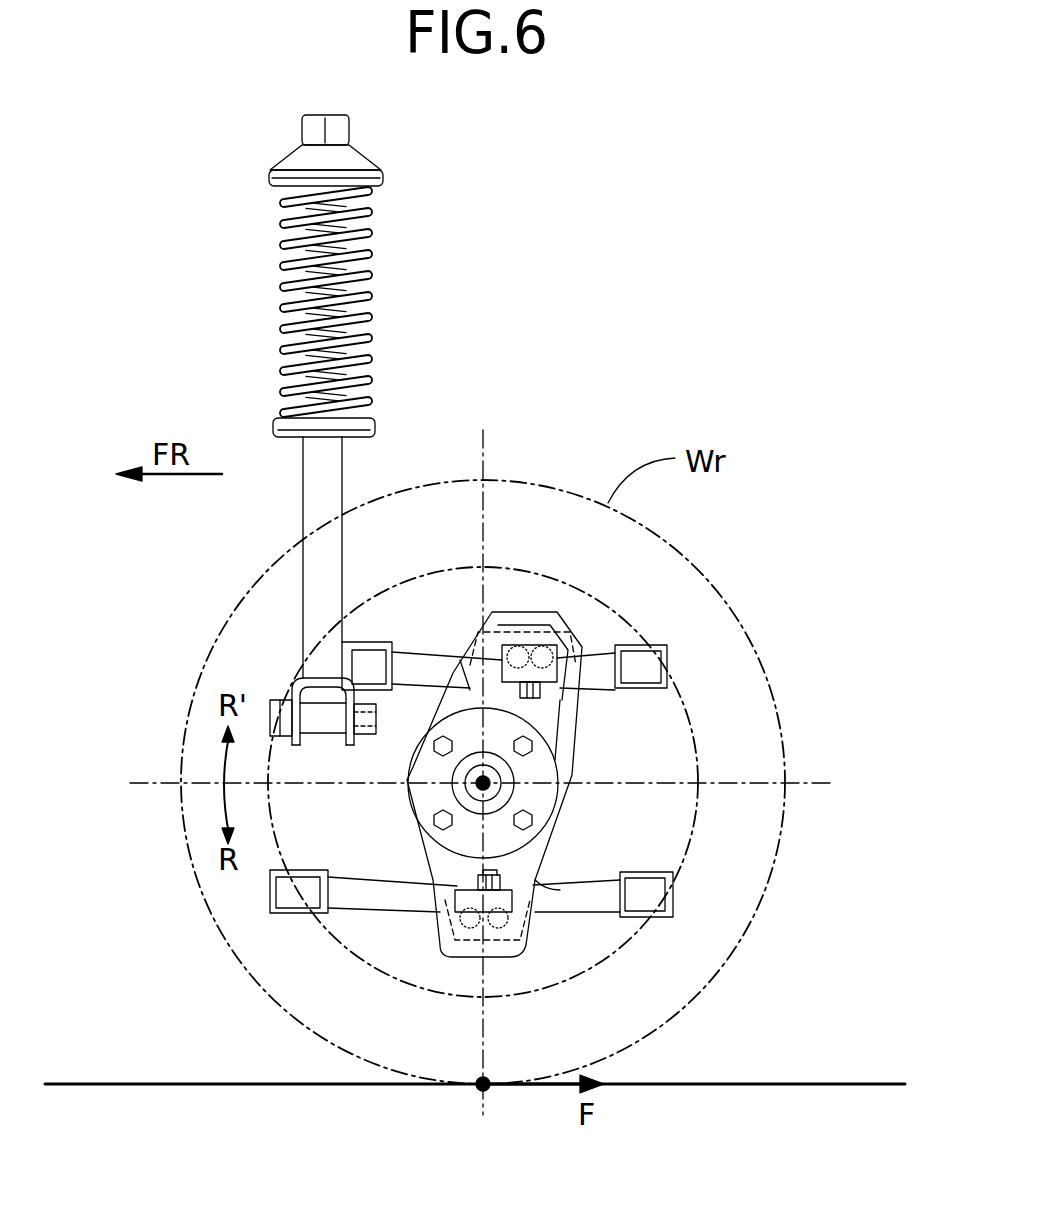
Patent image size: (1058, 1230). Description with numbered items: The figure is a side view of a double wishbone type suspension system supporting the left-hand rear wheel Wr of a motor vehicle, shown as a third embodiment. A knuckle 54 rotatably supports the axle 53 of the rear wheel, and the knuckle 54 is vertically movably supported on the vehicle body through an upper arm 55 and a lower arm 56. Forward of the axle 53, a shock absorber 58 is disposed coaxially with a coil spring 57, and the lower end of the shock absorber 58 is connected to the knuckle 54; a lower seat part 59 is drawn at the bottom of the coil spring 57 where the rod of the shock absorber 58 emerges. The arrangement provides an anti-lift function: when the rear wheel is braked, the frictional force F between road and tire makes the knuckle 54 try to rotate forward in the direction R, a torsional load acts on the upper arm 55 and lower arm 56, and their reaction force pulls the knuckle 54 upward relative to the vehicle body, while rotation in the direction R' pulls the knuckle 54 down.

The axle 53 is at (462, 812).
The knuckle 54 is at (573, 765).
The upper arm 55 is at (427, 663).
The lower arm 56 is at (398, 900).
The coil spring 57 is at (365, 300).
The shock absorber 58 is at (330, 560).
The spring seat 59 is at (290, 438).